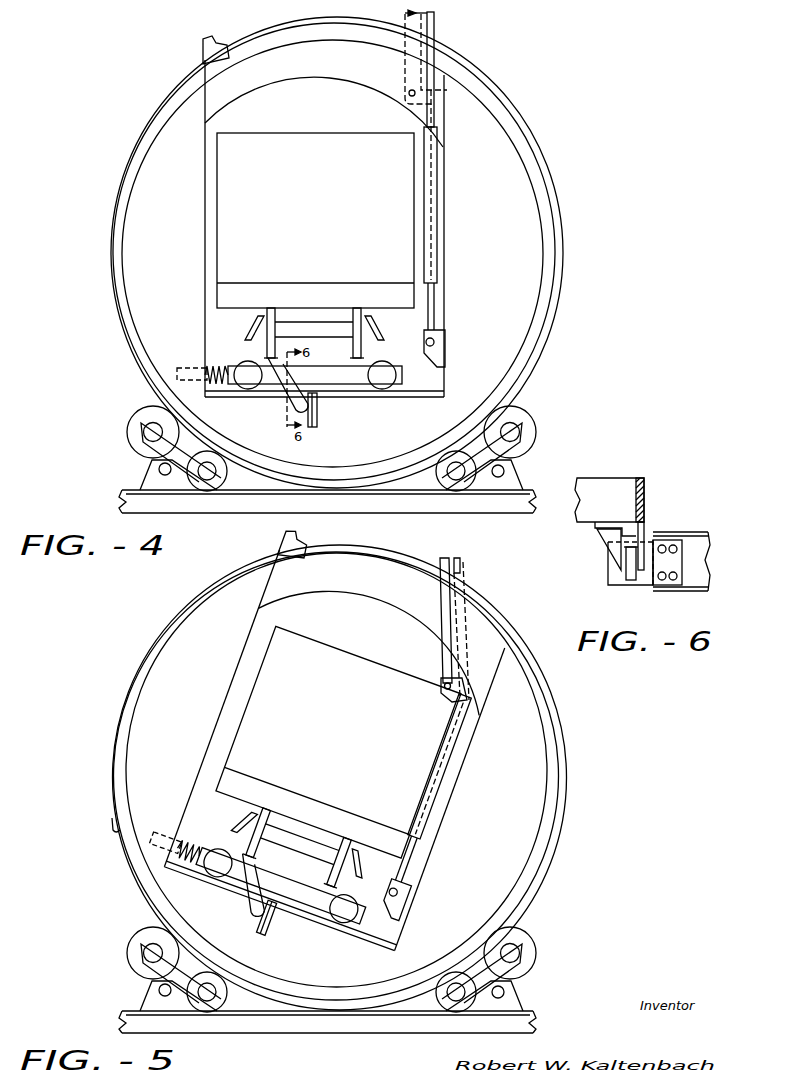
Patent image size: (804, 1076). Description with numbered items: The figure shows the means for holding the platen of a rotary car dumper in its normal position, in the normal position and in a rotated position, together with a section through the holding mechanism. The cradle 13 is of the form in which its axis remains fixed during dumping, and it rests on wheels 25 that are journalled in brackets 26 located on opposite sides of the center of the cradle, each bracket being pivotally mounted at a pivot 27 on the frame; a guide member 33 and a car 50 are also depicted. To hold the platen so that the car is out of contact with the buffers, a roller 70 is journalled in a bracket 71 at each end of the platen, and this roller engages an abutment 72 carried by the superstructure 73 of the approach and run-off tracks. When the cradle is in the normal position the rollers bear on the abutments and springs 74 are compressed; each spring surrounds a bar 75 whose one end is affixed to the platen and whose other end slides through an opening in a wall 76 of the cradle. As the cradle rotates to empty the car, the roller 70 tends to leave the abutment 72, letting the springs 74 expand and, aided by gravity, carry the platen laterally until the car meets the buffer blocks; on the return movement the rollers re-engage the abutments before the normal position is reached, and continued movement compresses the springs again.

In FIG. 4, the drum 13 is at (337, 252).
In FIG. 5, the drum 13 is at (160, 643).
In FIG. 4, the wheels 25 is at (140, 418).
In FIG. 5, the wheels 25 is at (143, 936).
In FIG. 4, the brackets 26 is at (150, 455).
In FIG. 5, the brackets 26 is at (150, 978).
In FIG. 4, the pivotal mounting 27 is at (159, 470).
In FIG. 5, the pivotal mounting 27 is at (505, 1003).
In FIG. 5, the guide strip 33 is at (442, 666).
In FIG. 4, the container 50 is at (315, 220).
In FIG. 5, the container 50 is at (338, 742).
In FIG. 4, the roller 70 is at (294, 409).
In FIG. 5, the roller 70 is at (257, 913).
In FIG. 6, the roller 70 is at (624, 568).
In FIG. 4, the bracket 71 is at (317, 387).
In FIG. 5, the bracket 71 is at (257, 898).
In FIG. 6, the bracket 71 is at (645, 506).
In FIG. 4, the abutment 72 is at (318, 414).
In FIG. 5, the abutment 72 is at (320, 943).
In FIG. 6, the abutment 72 is at (617, 582).
In FIG. 4, the superstructure 73 is at (388, 504).
In FIG. 5, the superstructure 73 is at (348, 1028).
In FIG. 6, the superstructure 73 is at (691, 542).
In FIG. 4, the springs 74 is at (218, 364).
In FIG. 5, the springs 74 is at (197, 842).
In FIG. 4, the bar 75 is at (187, 366).
In FIG. 5, the bar 75 is at (168, 828).
In FIG. 4, the wall 76 is at (205, 328).
In FIG. 5, the wall 76 is at (189, 800).